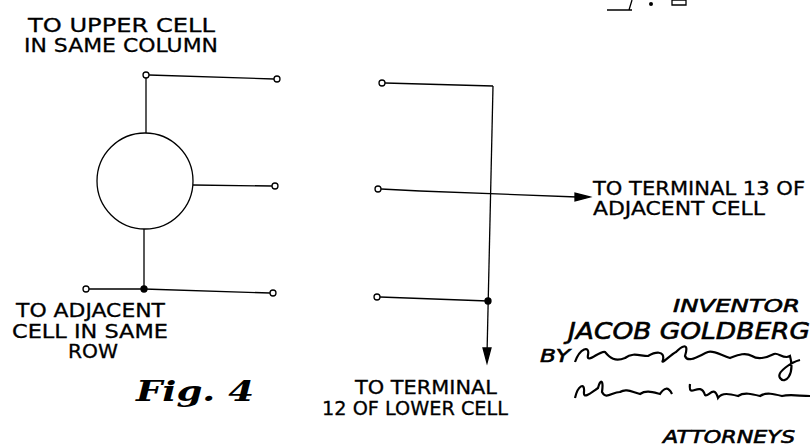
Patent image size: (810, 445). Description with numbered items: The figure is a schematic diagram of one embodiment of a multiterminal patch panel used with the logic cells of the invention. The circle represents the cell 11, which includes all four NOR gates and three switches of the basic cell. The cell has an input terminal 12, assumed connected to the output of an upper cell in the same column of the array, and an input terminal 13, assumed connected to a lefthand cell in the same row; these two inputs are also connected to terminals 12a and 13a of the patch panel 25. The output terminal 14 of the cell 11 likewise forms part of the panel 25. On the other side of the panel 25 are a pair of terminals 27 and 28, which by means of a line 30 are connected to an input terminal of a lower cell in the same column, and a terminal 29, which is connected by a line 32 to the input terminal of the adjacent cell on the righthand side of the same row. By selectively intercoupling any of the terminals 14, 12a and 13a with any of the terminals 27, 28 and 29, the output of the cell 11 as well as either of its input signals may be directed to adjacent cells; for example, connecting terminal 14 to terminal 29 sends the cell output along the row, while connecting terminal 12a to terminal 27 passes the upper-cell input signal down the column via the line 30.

The cell 11 is at (121, 139).
The input terminal 12 is at (127, 93).
The terminal 12a is at (230, 68).
The input terminal 13 is at (115, 260).
The terminal 13a is at (228, 278).
The output terminal 14 is at (245, 173).
The patch panel 25 is at (341, 140).
The terminal 27 is at (435, 69).
The terminal 28 is at (432, 287).
The terminal 29 is at (397, 174).
The line 30 is at (490, 258).
The line 32 is at (425, 192).